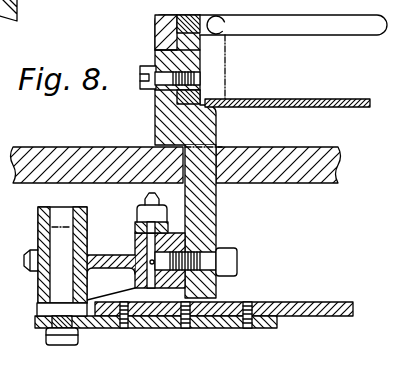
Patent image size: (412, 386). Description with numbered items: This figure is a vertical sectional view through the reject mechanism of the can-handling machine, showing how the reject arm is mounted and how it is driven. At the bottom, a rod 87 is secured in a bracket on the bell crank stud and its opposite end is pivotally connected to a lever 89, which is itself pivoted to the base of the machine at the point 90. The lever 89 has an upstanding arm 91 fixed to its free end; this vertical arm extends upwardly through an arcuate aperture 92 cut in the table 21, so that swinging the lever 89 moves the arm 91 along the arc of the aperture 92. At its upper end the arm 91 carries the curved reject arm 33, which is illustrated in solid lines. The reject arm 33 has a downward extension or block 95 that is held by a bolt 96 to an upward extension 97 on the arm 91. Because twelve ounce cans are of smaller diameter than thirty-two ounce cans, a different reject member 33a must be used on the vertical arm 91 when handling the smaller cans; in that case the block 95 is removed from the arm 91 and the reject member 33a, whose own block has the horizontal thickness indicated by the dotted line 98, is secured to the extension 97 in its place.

The table 21 is at (176, 154).
The curved reject arm 33 is at (340, 36).
The reject member 33a is at (226, 31).
The rod 87 is at (168, 230).
The lever 89 is at (108, 255).
The pivot point 90 is at (58, 207).
The upstanding arm 91 is at (160, 122).
The arcuate aperture 92 is at (217, 148).
The block 95 is at (200, 98).
The bolt 96 is at (200, 80).
The upward extension 97 is at (160, 52).
The dotted line 98 is at (225, 60).